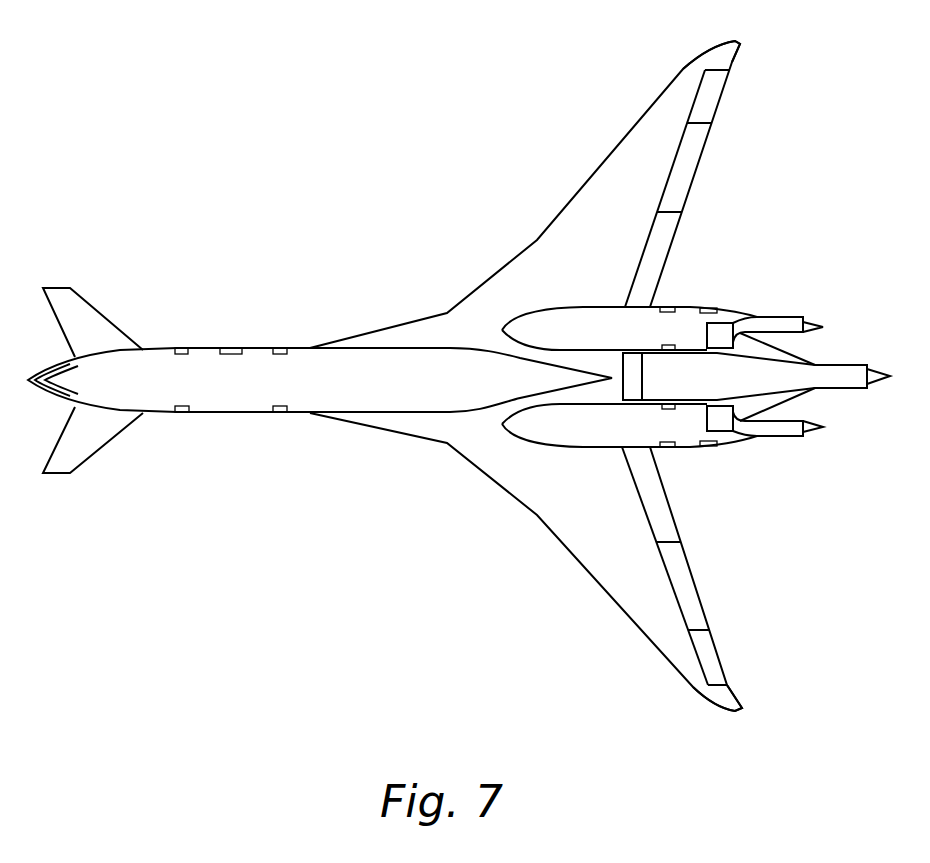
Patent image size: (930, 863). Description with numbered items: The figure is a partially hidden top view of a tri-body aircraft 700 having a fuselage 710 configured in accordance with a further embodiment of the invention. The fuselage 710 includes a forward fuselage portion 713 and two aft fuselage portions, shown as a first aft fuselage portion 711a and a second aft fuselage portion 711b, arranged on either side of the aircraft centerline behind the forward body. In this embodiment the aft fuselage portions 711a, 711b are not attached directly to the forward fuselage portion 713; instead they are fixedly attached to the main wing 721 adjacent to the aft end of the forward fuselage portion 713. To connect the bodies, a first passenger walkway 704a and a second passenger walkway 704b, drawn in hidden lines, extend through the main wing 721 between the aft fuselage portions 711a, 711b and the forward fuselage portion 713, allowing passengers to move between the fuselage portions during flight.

The aircraft 700 is at (279, 221).
The first passenger walkway 704a is at (522, 403).
The second passenger walkway 704b is at (522, 350).
The fuselage 710 is at (576, 356).
The first aft fuselage portion 711a is at (603, 450).
The second aft fuselage portion 711b is at (760, 306).
The forward fuselage portion 713 is at (160, 347).
The main wing 721 is at (735, 60).